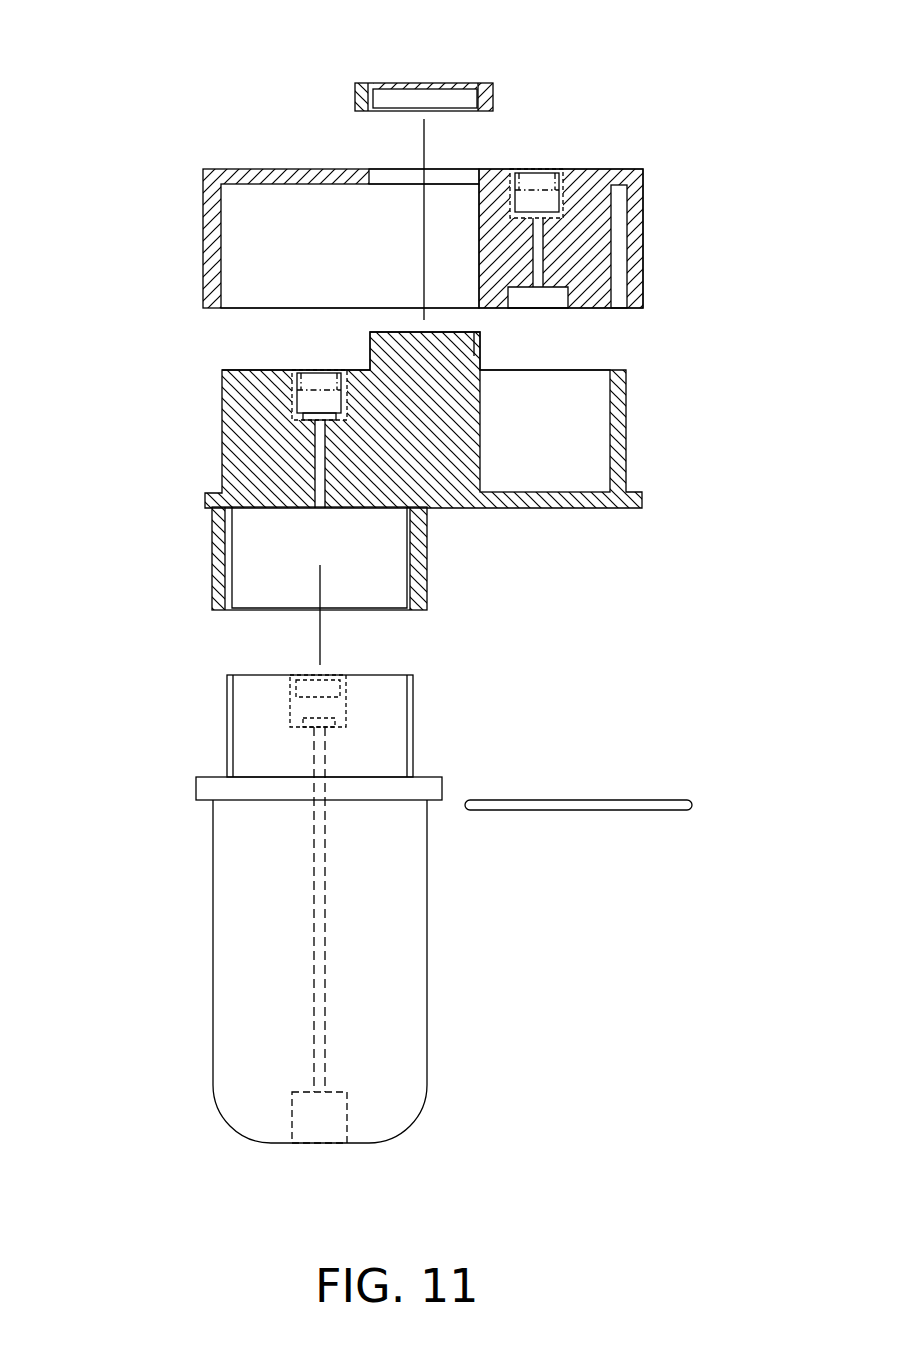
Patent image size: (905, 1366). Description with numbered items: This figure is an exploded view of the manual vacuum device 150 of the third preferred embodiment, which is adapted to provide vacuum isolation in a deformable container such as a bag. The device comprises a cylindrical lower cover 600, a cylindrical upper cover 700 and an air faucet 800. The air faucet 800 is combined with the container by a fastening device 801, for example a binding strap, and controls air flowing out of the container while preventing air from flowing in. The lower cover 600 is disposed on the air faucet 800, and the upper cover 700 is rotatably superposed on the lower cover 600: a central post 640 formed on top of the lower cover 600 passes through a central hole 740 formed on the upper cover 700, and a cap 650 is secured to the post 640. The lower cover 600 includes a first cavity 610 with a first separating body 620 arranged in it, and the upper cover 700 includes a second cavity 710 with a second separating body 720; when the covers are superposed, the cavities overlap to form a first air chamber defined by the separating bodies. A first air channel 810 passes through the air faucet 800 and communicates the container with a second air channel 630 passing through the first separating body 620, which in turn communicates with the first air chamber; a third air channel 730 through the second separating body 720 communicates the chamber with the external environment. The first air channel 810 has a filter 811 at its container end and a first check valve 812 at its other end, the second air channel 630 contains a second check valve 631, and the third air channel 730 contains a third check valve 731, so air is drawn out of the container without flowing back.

The manual vacuum device 150 is at (742, 152).
The lower cover 600 is at (192, 382).
The first cavity 610 is at (590, 440).
The first separating body 620 is at (243, 425).
The second air channel 630 is at (320, 463).
The second check valve 631 is at (318, 410).
The central post 640 is at (480, 342).
The cap 650 is at (355, 97).
The upper cover 700 is at (180, 203).
The second cavity 710 is at (256, 213).
The second separating body 720 is at (590, 228).
The third air channel 730 is at (542, 262).
The third check valve 731 is at (537, 185).
The central hole 740 is at (392, 178).
The air faucet 800 is at (158, 793).
The fastening device 801 is at (558, 800).
The first air channel 810 is at (320, 975).
The filter 811 is at (330, 1117).
The first check valve 812 is at (325, 713).